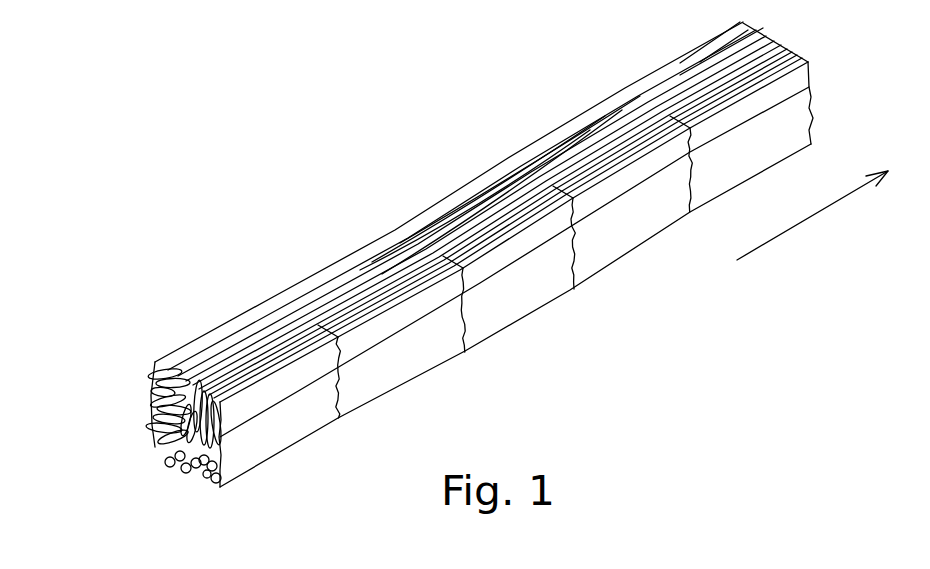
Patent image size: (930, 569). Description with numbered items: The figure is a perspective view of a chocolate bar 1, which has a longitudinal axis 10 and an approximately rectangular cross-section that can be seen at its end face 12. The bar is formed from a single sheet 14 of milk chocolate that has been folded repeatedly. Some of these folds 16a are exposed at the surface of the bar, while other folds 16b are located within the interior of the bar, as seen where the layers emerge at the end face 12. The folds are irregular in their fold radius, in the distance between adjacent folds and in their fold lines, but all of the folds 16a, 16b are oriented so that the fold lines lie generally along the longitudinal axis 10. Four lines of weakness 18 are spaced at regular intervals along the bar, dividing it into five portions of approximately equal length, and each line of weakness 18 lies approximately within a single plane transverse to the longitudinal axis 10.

The chocolate bar 1 is at (328, 133).
The longitudinal axis 10 is at (812, 220).
The end face 12 is at (160, 418).
The single sheet 14 is at (518, 293).
The folds 16a is at (550, 137).
The folds 16b is at (193, 450).
The lines of weakness 18 is at (340, 395).